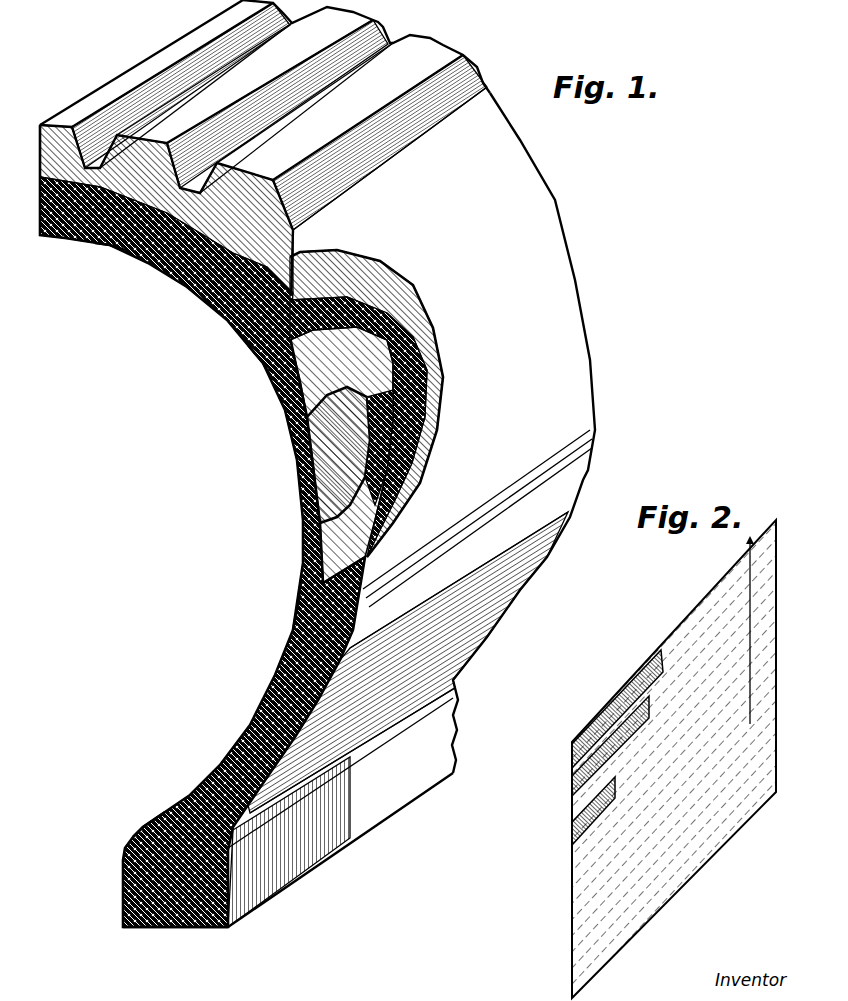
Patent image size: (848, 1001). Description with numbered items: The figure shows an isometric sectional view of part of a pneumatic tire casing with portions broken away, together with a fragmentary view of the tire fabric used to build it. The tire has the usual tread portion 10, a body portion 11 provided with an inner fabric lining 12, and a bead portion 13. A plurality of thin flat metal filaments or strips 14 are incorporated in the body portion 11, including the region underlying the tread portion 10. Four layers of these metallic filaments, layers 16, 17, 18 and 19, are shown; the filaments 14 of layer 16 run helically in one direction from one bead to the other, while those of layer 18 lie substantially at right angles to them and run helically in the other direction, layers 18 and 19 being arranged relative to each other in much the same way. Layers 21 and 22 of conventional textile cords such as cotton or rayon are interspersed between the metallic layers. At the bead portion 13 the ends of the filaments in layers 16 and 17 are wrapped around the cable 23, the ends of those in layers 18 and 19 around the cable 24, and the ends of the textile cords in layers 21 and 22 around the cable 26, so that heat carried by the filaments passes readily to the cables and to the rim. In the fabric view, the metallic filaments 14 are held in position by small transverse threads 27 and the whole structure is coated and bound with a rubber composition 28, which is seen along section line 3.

In FIG. 1, the tread portion 10 is at (545, 207).
In FIG. 1, the body portion 11 is at (294, 597).
In FIG. 1, the inner fabric lining 12 is at (263, 383).
In FIG. 1, the bead portion 13 is at (210, 928).
In FIG. 1, the metal filaments 14 is at (353, 257).
In FIG. 2, the metal filaments 14 is at (576, 823).
In FIG. 1, the layer of metallic filaments 16 is at (187, 288).
In FIG. 1, the layer of metallic filaments 17 is at (65, 238).
In FIG. 1, the layer of metallic filaments 18 is at (298, 225).
In FIG. 1, the layer of metallic filaments 19 is at (298, 247).
In FIG. 1, the layer of textile cords 21 is at (110, 246).
In FIG. 1, the layer of textile cords 22 is at (167, 158).
In FIG. 1, the bead cable 23 is at (150, 928).
In FIG. 1, the bead cable 24 is at (187, 928).
In FIG. 1, the bead cable 26 is at (140, 828).
In FIG. 2, the transverse threads 27 is at (630, 697).
In FIG. 2, the rubber composition 28 is at (777, 746).
In FIG. 2, the section line 3- 3 is at (741, 638).